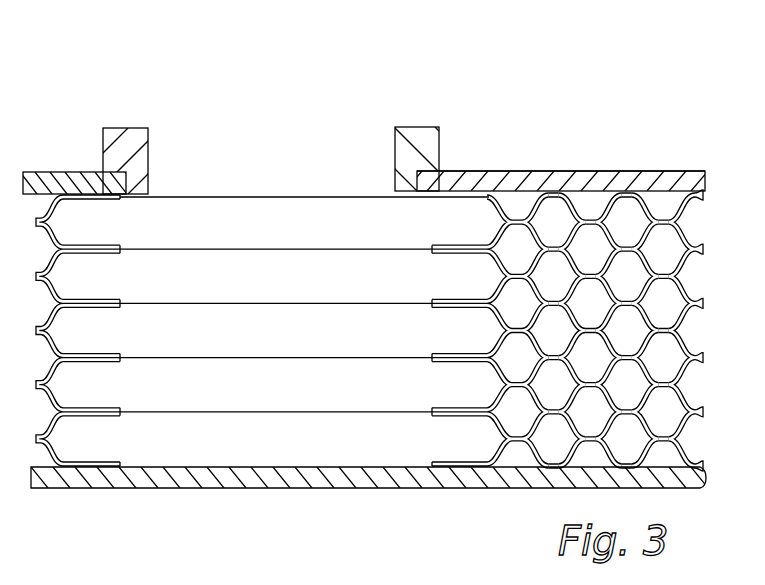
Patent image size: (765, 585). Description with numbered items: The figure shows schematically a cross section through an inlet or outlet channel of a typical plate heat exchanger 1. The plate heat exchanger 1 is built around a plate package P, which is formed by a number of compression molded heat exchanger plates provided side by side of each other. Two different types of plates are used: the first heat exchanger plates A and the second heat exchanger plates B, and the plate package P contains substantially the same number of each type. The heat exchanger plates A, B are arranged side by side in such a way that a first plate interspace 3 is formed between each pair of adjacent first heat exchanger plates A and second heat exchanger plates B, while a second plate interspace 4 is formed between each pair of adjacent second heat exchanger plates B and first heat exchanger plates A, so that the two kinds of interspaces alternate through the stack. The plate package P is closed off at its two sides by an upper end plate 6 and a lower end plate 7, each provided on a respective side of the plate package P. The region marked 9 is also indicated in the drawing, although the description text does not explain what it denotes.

The plate heat exchanger 1 is at (362, 290).
The first plate interspace 3 is at (552, 212).
The second plate interspace 4 is at (587, 242).
The upper end plate 6 is at (465, 168).
The lower end plate 7 is at (353, 480).
The gap 9 is at (280, 155).
The plate package P is at (576, 170).
The first heat exchanger plate A is at (660, 210).
The second heat exchanger plate B is at (688, 230).